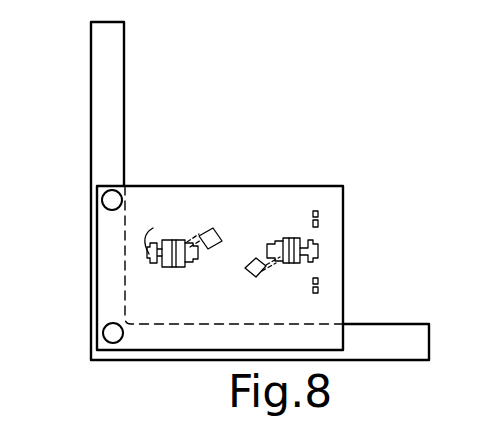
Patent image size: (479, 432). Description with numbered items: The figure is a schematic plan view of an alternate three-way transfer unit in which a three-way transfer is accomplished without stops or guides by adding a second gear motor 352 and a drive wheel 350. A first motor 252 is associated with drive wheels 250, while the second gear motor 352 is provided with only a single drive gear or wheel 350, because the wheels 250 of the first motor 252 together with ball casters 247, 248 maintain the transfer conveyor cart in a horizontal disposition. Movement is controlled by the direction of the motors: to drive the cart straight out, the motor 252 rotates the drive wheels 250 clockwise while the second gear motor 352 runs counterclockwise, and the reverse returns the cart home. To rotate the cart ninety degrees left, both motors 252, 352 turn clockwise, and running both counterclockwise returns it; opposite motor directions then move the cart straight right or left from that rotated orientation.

The ball caster 247 is at (110, 190).
The ball caster 248 is at (112, 333).
The drive wheels 250 is at (318, 216).
The motor 252 is at (293, 228).
The drive wheel 350 is at (171, 234).
The second gear motor 352 is at (192, 222).